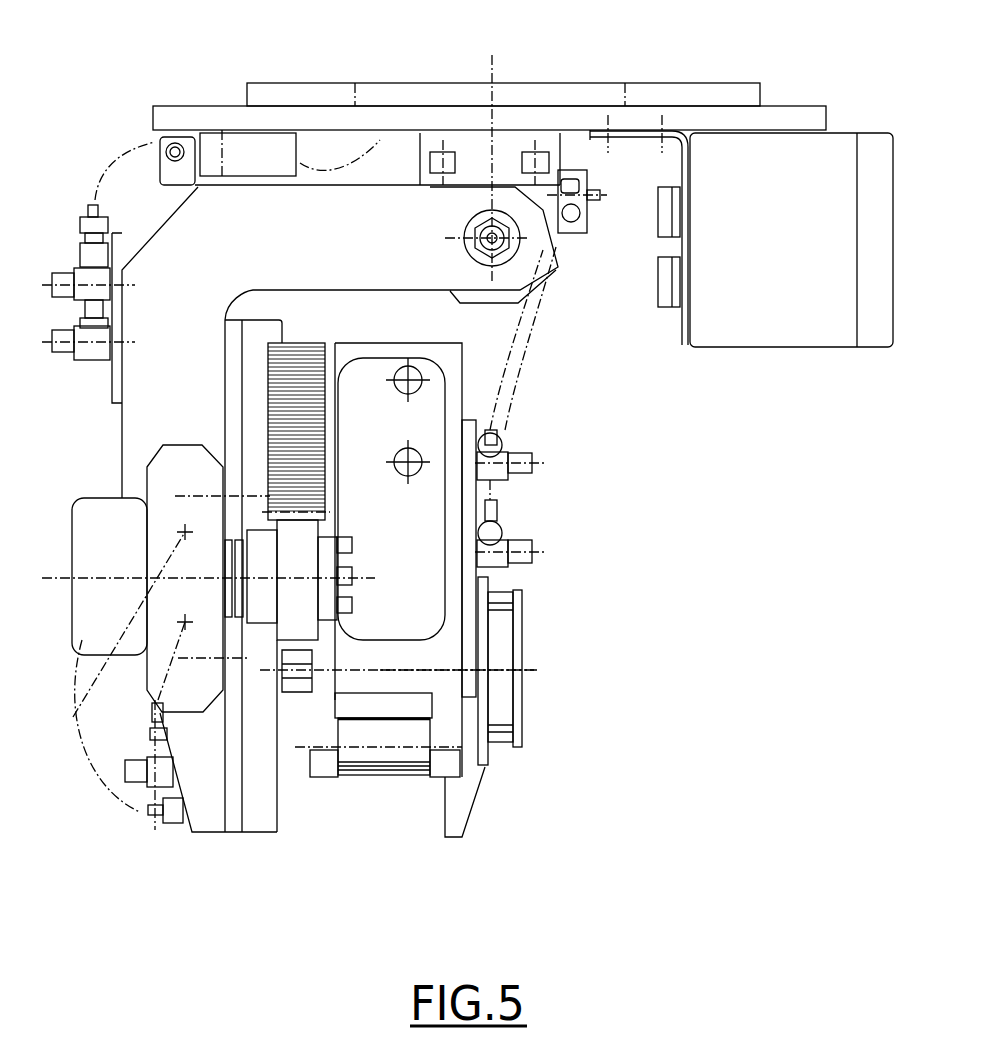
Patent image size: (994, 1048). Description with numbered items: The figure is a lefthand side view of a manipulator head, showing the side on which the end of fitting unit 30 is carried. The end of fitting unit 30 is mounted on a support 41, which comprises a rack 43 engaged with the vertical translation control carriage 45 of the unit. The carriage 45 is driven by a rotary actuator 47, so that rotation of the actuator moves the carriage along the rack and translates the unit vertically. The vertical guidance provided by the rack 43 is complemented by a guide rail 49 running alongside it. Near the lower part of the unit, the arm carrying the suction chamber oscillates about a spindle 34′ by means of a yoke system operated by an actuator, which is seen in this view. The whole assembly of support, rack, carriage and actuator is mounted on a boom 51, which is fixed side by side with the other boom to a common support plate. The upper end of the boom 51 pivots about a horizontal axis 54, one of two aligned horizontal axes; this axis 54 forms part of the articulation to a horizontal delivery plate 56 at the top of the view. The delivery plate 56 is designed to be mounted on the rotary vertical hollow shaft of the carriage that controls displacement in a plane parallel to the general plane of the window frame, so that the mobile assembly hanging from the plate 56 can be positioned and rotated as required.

The horizontal delivery plate 56 is at (408, 116).
The horizontal axis 54 is at (492, 235).
The boom 51 is at (226, 235).
The guide rail 49 is at (258, 332).
The rack 43 is at (292, 445).
The vertical translation control carriage 45 is at (297, 606).
The rotary actuator 47 is at (182, 590).
The support 41 is at (437, 655).
The end of fitting unit 30 is at (554, 648).
The spindle 34′ is at (393, 755).